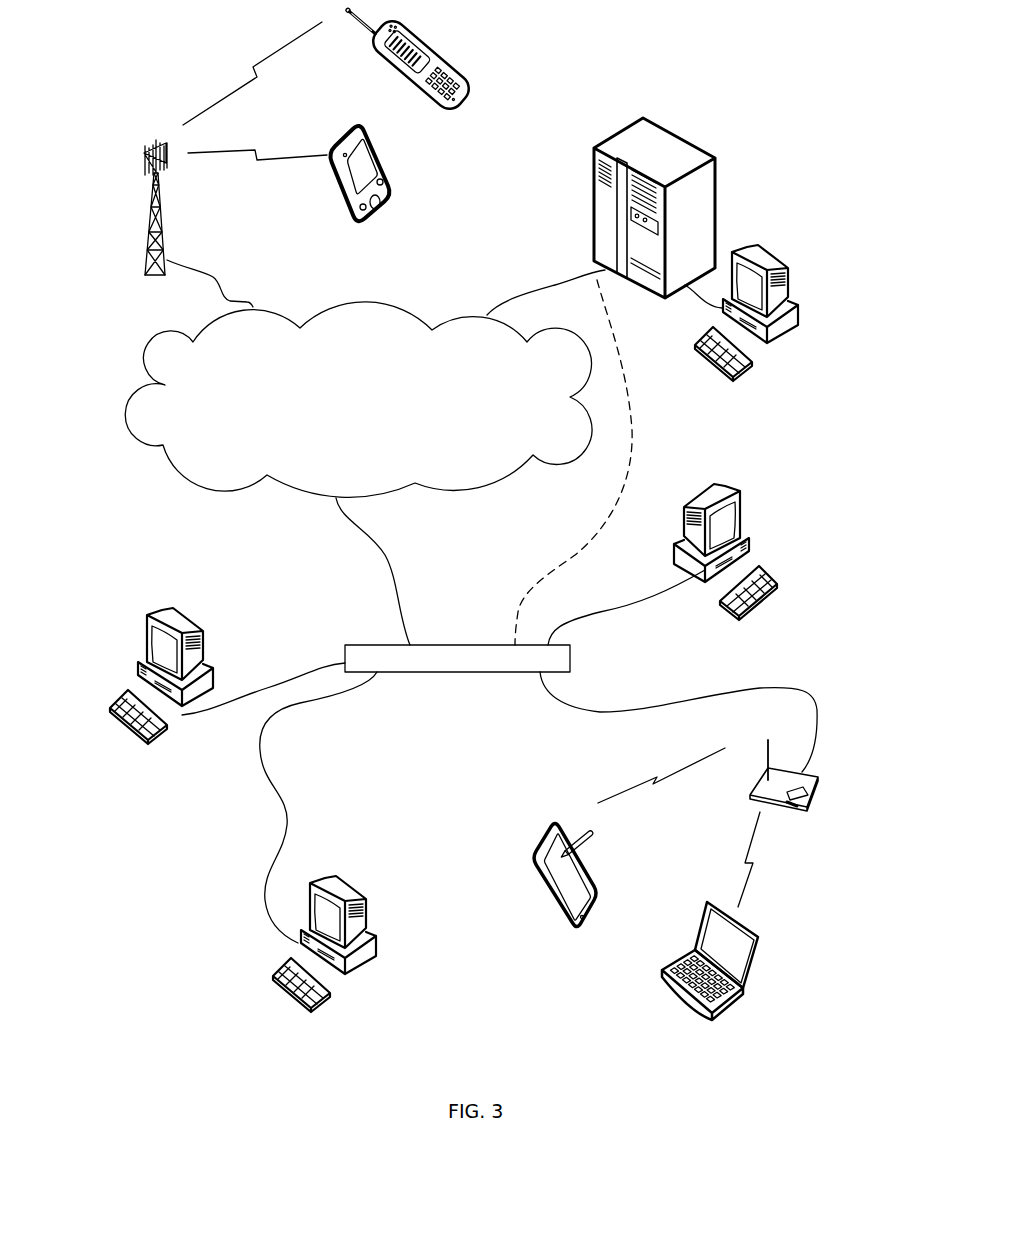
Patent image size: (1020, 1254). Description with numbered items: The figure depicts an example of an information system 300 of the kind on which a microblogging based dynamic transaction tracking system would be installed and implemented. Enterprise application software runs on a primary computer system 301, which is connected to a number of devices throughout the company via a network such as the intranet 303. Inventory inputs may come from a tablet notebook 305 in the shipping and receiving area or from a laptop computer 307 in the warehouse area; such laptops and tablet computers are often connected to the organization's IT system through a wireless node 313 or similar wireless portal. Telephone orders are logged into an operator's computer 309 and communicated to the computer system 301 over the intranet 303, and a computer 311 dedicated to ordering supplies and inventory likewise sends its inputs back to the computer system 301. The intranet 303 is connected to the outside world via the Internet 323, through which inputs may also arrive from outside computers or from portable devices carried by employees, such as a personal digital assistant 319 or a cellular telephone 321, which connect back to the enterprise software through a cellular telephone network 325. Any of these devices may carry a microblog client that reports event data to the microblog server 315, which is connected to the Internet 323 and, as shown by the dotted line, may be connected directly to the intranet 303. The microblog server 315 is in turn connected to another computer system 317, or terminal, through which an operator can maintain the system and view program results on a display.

The information system 300 is at (130, 1096).
The computer system 301 is at (752, 479).
The intranet 303 is at (430, 674).
The tablet notebook 305 is at (533, 850).
The laptop computer 307 is at (681, 953).
The operator's computer 309 is at (362, 891).
The computer 311 is at (195, 624).
The wireless node 313 is at (810, 801).
The microblog server 315 is at (593, 247).
The computer system 317 is at (773, 254).
The personal digital assistant 319 is at (355, 226).
The cellular telephone 321 is at (455, 113).
The Internet 323 is at (193, 486).
The cellular telephone network 325 is at (168, 253).